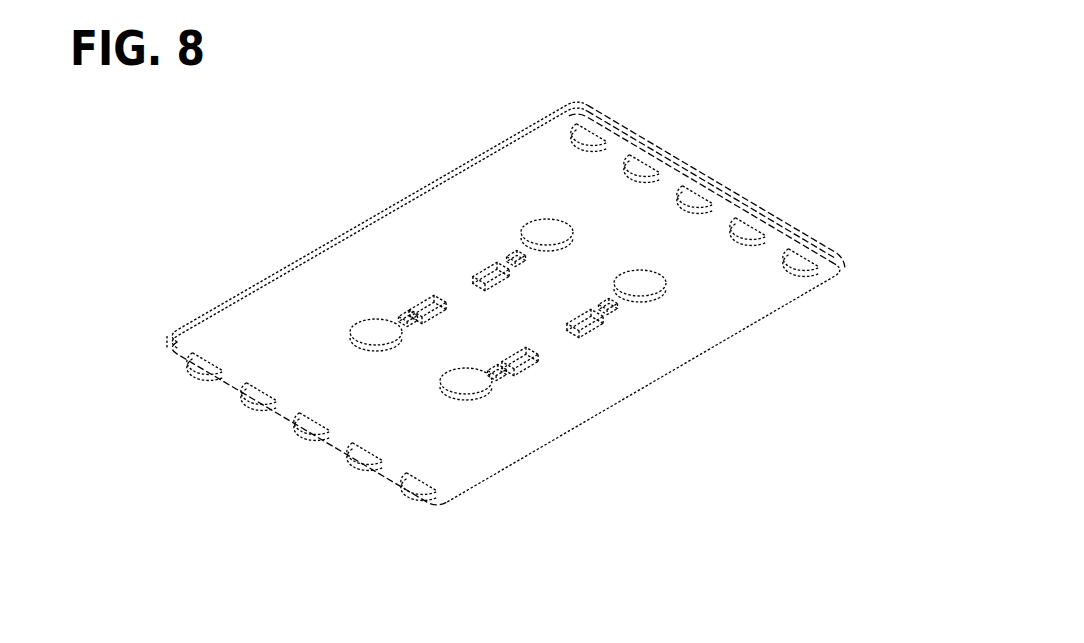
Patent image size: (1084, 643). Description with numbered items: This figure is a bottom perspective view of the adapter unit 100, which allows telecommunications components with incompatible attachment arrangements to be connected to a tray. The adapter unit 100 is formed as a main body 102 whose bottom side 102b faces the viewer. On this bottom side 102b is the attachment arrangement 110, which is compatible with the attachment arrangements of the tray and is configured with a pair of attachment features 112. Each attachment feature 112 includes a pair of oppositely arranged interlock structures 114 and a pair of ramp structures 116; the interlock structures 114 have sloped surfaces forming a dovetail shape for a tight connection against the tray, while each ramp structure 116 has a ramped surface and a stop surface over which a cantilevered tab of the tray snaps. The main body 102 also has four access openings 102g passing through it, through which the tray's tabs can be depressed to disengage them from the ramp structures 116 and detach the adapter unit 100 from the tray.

The adapter unit 100 is at (317, 140).
The main body 102 is at (833, 260).
The bottom side 102b is at (670, 352).
The access openings 102g is at (372, 330).
The attachment arrangement 110 is at (437, 242).
The attachment features 112 is at (266, 164).
The interlock structures 114 is at (483, 267).
The ramp structures 116 is at (508, 252).